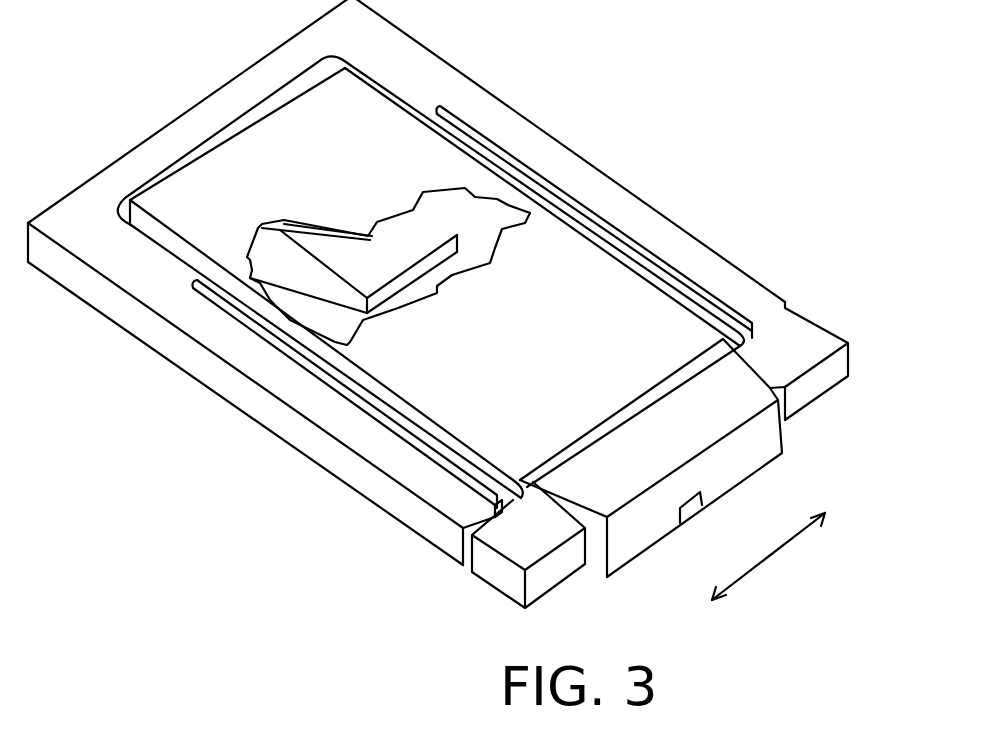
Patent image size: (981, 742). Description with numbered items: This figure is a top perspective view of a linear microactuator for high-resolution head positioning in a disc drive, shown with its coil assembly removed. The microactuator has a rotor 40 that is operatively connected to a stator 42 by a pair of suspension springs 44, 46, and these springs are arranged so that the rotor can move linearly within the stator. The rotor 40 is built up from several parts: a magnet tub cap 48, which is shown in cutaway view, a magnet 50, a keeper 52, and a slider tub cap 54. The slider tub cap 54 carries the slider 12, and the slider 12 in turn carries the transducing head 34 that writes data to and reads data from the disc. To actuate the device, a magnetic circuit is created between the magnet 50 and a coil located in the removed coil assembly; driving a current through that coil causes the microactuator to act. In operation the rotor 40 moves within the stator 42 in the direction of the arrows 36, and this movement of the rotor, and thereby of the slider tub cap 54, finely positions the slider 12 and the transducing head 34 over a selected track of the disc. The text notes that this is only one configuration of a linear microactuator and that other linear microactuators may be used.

The slider 12 is at (730, 420).
The transducing head 34 is at (697, 513).
The arrows 36 is at (773, 557).
The rotor 40 is at (252, 135).
The stator 42 is at (138, 160).
The suspension spring 44 is at (402, 420).
The suspension spring 46 is at (617, 249).
The magnet tub cap 48 is at (345, 241).
The magnet 50 is at (335, 253).
The keeper 52 is at (335, 310).
The slider tub cap 54 is at (668, 333).